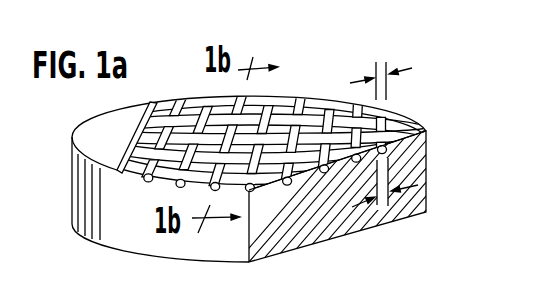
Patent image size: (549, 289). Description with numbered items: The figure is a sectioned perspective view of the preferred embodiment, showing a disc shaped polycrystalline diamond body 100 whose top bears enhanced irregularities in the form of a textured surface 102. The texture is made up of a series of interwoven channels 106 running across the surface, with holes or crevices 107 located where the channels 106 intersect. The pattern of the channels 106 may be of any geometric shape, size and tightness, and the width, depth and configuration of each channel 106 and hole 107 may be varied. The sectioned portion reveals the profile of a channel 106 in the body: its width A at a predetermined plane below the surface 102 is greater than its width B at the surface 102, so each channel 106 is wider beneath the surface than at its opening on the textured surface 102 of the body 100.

The polycrystalline diamond body 100 is at (443, 152).
The textured surface 102 is at (422, 108).
The channel 106 is at (275, 107).
The hole 107 is at (205, 123).
The width of the channel at a predetermined plane below the surface A is at (388, 206).
The width of the channel at the surface B is at (380, 62).